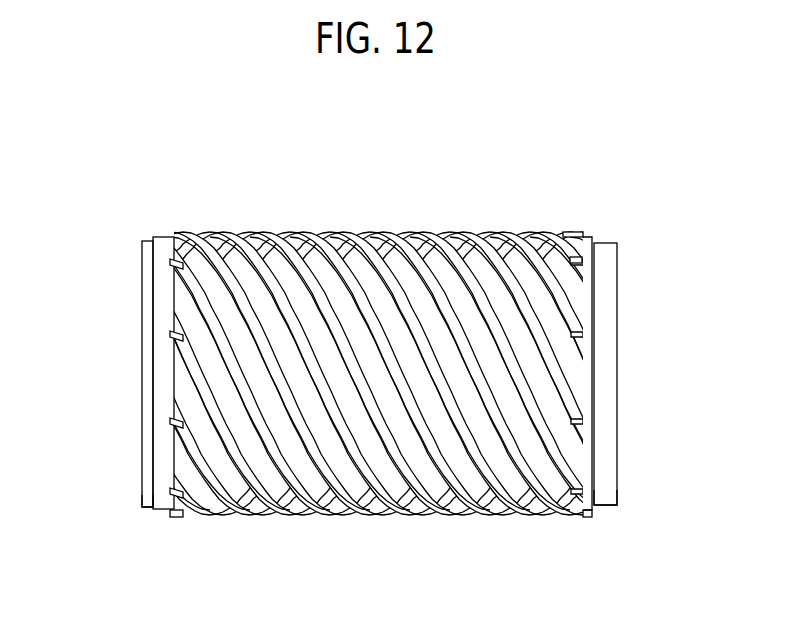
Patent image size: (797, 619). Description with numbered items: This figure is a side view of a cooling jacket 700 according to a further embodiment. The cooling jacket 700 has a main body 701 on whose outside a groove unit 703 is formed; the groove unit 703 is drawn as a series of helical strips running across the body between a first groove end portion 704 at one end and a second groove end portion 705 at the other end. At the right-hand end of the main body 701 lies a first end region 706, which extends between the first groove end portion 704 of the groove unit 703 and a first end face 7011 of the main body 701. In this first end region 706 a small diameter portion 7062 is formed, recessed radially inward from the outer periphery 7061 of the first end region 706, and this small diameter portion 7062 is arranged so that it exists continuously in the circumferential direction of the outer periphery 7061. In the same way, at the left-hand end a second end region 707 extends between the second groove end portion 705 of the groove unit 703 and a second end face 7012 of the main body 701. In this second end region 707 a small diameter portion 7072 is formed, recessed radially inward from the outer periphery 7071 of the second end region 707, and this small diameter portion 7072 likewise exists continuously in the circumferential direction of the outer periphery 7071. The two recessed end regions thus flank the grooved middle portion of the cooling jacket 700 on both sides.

The cooling jacket 700 is at (570, 137).
The main body 701 is at (442, 208).
The groove unit 703 is at (397, 291).
The first groove end portion 704 is at (591, 233).
The second groove end portion 705 is at (170, 518).
The first end region 706 is at (617, 533).
The second end region 707 is at (182, 533).
The first end face 7011 is at (617, 293).
The second end face 7012 is at (142, 313).
The outer periphery of the first end region 7061 is at (590, 512).
The small diameter portion 7062 is at (605, 505).
The outer periphery of the second end region 7071 is at (163, 237).
The small diameter portion 7072 is at (147, 507).